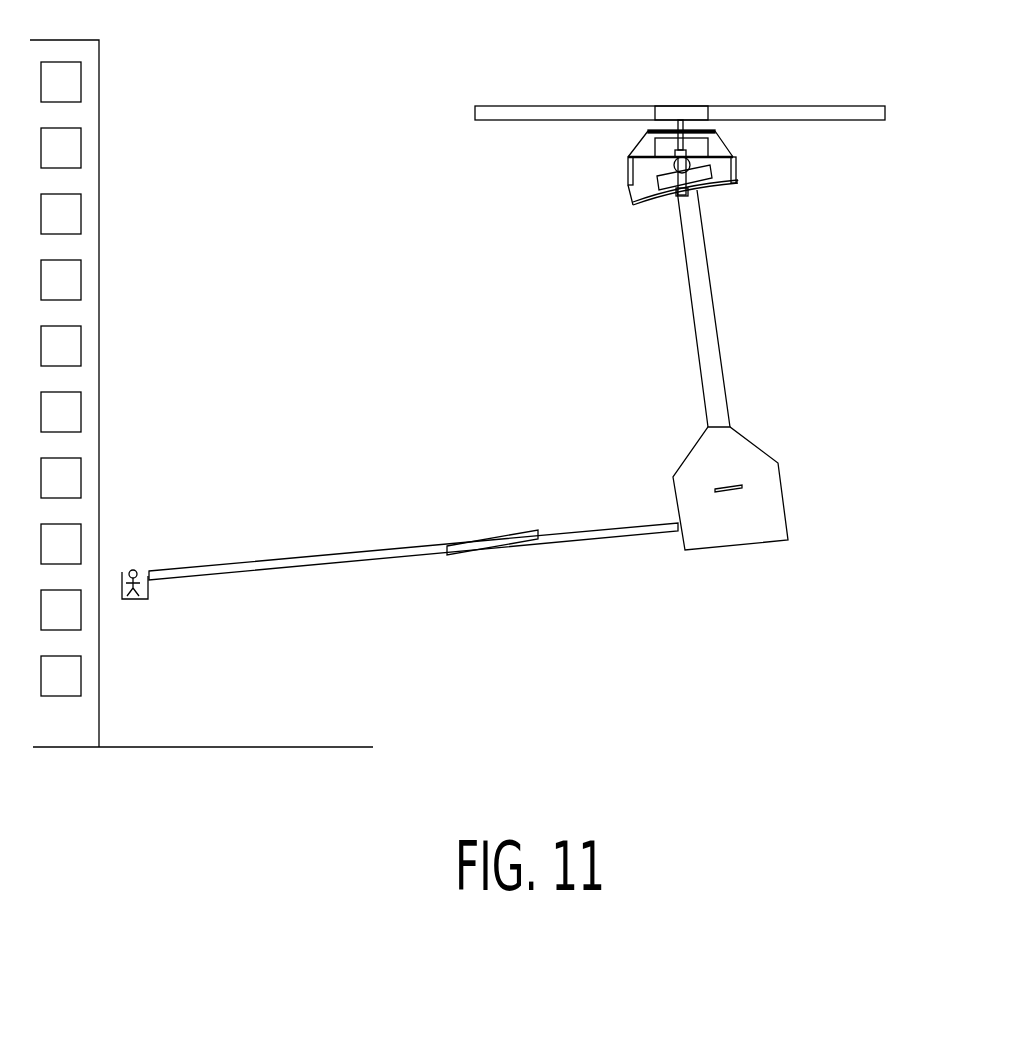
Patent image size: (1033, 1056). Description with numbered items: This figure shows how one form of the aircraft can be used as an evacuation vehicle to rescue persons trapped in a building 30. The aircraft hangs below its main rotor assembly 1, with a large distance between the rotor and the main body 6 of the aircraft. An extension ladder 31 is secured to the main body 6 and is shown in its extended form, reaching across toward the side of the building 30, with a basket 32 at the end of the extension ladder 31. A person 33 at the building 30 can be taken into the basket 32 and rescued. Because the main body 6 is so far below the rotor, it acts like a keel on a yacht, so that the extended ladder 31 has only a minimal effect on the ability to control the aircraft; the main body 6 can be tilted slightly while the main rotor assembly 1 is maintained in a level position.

The main rotor assembly 1 is at (672, 95).
The main body 6 is at (768, 528).
The building 30 is at (127, 304).
The extension ladder 31 is at (383, 523).
The basket 32 is at (167, 605).
The person 33 is at (135, 565).